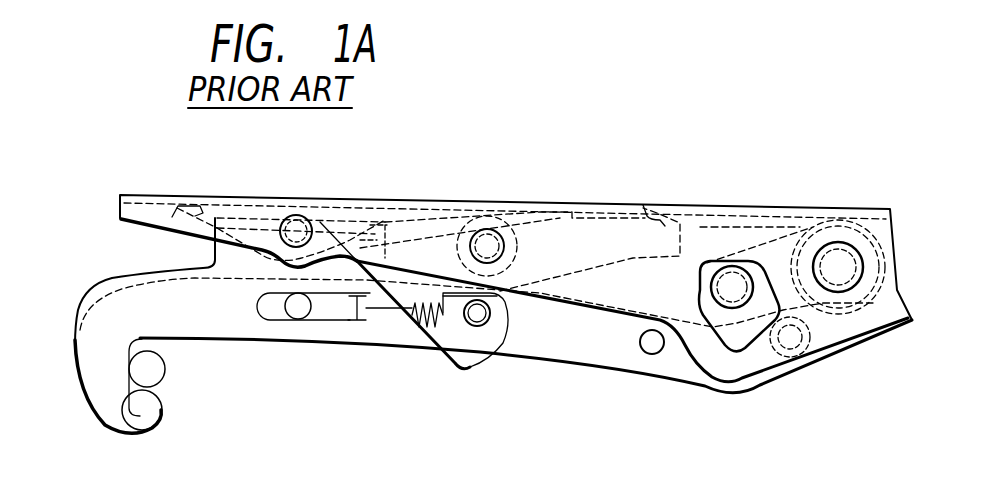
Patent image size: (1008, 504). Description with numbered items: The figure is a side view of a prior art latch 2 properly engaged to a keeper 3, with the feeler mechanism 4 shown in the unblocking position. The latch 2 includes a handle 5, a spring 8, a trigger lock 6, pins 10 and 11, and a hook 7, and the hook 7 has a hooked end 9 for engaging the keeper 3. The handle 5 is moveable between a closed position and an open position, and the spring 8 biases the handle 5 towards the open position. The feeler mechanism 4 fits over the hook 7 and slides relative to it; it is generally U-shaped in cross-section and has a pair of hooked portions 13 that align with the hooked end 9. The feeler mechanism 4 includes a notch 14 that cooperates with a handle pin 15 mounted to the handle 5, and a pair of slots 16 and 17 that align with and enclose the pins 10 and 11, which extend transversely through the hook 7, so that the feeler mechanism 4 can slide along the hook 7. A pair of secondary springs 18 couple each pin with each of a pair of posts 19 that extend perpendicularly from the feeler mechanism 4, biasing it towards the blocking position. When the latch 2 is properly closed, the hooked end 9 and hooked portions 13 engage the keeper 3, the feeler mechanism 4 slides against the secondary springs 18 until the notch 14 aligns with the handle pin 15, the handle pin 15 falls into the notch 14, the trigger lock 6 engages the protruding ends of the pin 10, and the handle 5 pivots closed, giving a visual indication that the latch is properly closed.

The latch 2 is at (503, 190).
The keeper 3 is at (150, 369).
The feeler mechanism 4 is at (121, 252).
The handle 5 is at (213, 196).
The trigger lock 6 is at (460, 356).
The hook 7 is at (644, 380).
The spring 8 is at (860, 233).
The hooked end 9 is at (143, 409).
The pin 10 is at (479, 318).
The pin 11 is at (298, 307).
The hooked portions 13 is at (97, 380).
The notch 14 is at (320, 222).
The handle pin 15 is at (294, 226).
The slot 16 is at (450, 313).
The slot 17 is at (246, 301).
The secondary springs 18 is at (413, 314).
The posts 19 is at (352, 307).